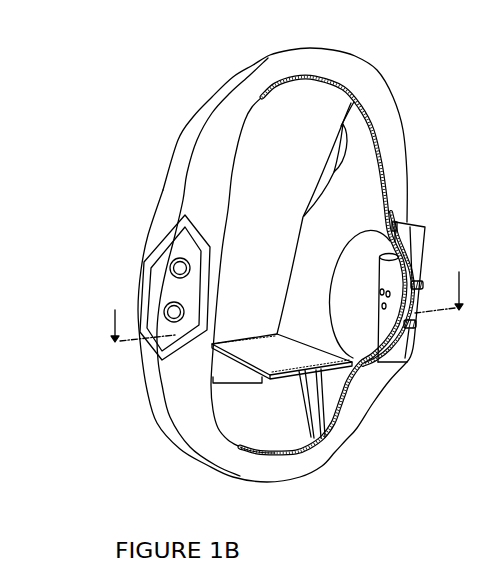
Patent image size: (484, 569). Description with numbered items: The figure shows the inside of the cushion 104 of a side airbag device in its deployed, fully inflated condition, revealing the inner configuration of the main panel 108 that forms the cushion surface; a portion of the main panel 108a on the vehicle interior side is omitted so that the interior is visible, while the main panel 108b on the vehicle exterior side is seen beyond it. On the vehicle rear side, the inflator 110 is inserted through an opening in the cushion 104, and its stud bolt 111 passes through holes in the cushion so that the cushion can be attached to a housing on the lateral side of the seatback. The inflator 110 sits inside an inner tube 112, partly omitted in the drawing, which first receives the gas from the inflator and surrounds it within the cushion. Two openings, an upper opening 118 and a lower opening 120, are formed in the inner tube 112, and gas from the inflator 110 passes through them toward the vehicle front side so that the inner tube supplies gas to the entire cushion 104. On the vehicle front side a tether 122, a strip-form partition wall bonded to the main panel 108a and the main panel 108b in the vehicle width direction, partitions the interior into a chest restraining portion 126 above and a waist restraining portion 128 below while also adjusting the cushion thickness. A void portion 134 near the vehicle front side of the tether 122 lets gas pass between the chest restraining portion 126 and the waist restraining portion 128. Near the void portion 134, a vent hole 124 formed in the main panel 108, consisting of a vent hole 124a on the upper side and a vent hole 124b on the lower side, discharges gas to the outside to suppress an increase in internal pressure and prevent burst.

The cushion 104 is at (197, 73).
The main panel 108 is at (104, 112).
The main panel on the vehicle interior side 108a is at (228, 138).
The main panel on the vehicle exterior side 108b is at (199, 114).
The inflator 110 is at (390, 273).
The stud bolt 111 is at (417, 306).
The inner tube 112 is at (358, 203).
The upper opening 118 is at (346, 148).
The lower opening 120 is at (316, 412).
The tether 122 is at (293, 350).
The vent hole 124 is at (63, 252).
The vent hole on the upper side 124a is at (170, 268).
The vent hole on the lower side 124b is at (165, 312).
The chest restraining portion 126 is at (243, 210).
The waist restraining portion 128 is at (255, 427).
The void portion 134 is at (240, 388).